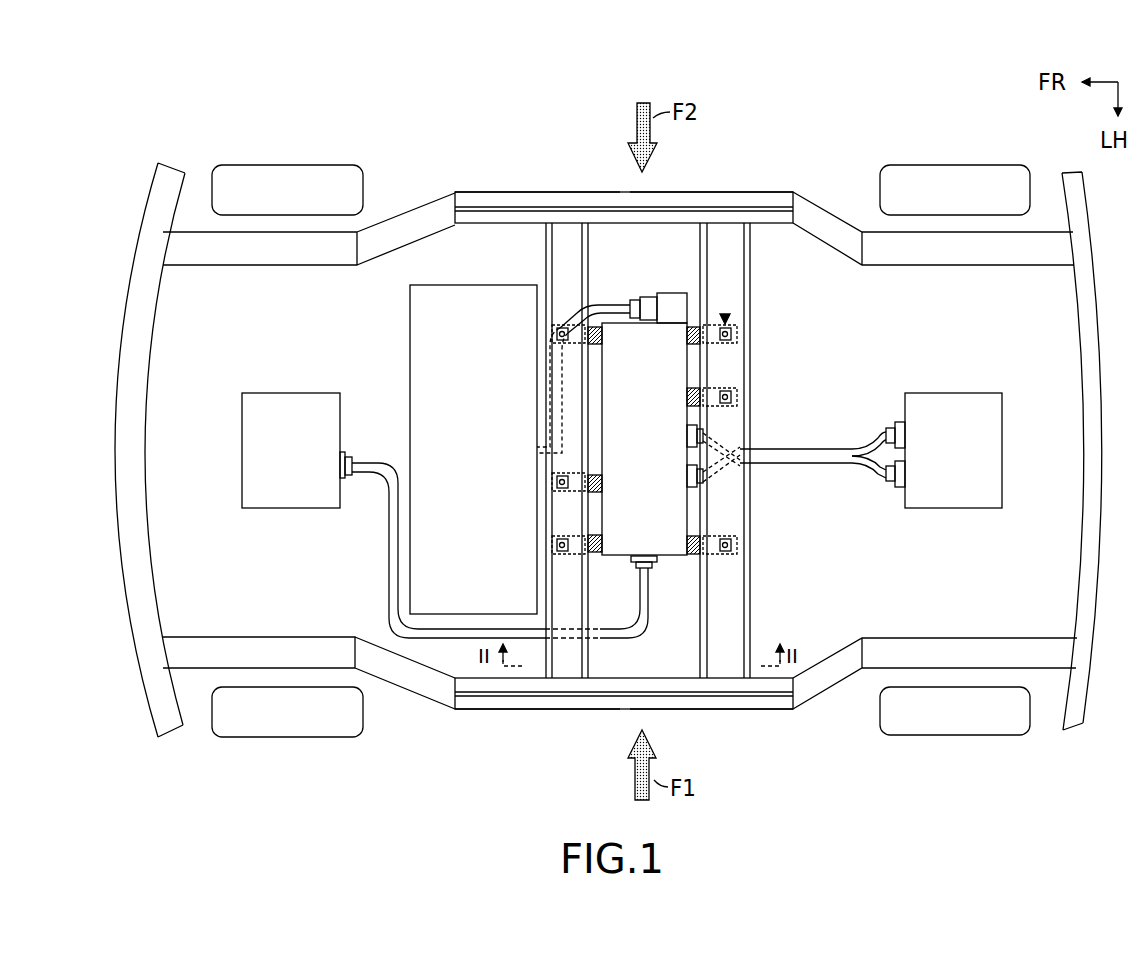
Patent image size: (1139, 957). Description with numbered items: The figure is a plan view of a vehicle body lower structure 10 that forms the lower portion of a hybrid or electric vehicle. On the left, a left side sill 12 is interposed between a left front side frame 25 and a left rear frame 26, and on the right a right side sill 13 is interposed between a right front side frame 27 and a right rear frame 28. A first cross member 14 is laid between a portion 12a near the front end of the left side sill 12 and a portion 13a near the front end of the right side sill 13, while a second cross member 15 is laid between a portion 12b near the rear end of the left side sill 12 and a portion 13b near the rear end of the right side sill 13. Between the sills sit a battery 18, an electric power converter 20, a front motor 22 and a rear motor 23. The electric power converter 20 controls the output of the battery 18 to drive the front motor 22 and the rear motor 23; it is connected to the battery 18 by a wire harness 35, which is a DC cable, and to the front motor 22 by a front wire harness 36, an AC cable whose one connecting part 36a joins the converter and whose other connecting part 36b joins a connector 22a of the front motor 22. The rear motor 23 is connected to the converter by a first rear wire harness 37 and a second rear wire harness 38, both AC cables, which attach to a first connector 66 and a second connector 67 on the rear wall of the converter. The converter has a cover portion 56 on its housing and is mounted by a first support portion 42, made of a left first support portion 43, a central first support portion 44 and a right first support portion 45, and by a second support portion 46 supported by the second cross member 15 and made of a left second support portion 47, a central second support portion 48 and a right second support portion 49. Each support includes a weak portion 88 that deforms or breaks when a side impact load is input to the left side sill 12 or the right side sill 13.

The vehicle body lower structure 10 is at (228, 111).
The left side sill 12 is at (627, 702).
The portion near front end of left side sill 12a is at (562, 685).
The portion near rear end of left side sill 12b is at (730, 700).
The right side sill 13 is at (655, 197).
The portion near front end of right side sill 13a is at (562, 197).
The portion near rear end of right side sill 13b is at (737, 197).
The first cross member 14 is at (548, 585).
The second cross member 15 is at (750, 607).
The battery 18 is at (452, 300).
The electric power converter 20 is at (670, 557).
The front motor 22 is at (290, 403).
The connector of front motor 22a is at (345, 455).
The rear motor 23 is at (967, 393).
The left front side frame 25 is at (270, 658).
The left rear frame 26 is at (955, 658).
The right front side frame 27 is at (273, 243).
The right rear frame 28 is at (935, 243).
The wire harness 35 is at (618, 308).
The front wire harness 36 is at (397, 545).
The one connecting part of front wire harness 36a is at (637, 568).
The other connecting part of front wire harness 36b is at (352, 459).
The first rear wire harness 37 is at (878, 476).
The second rear wire harness 38 is at (880, 433).
The first support portion 42 is at (562, 324).
The left first support portion 43 is at (552, 545).
The central first support portion 44 is at (552, 482).
The right first support portion 45 is at (552, 333).
The second support portion 46 is at (725, 316).
The left second support portion 47 is at (737, 545).
The central second support portion 48 is at (737, 395).
The right second support portion 49 is at (737, 333).
The cover portion 56 is at (635, 337).
The first connector 66 is at (687, 476).
The second connector 67 is at (687, 437).
The weak portion 88 is at (692, 396).